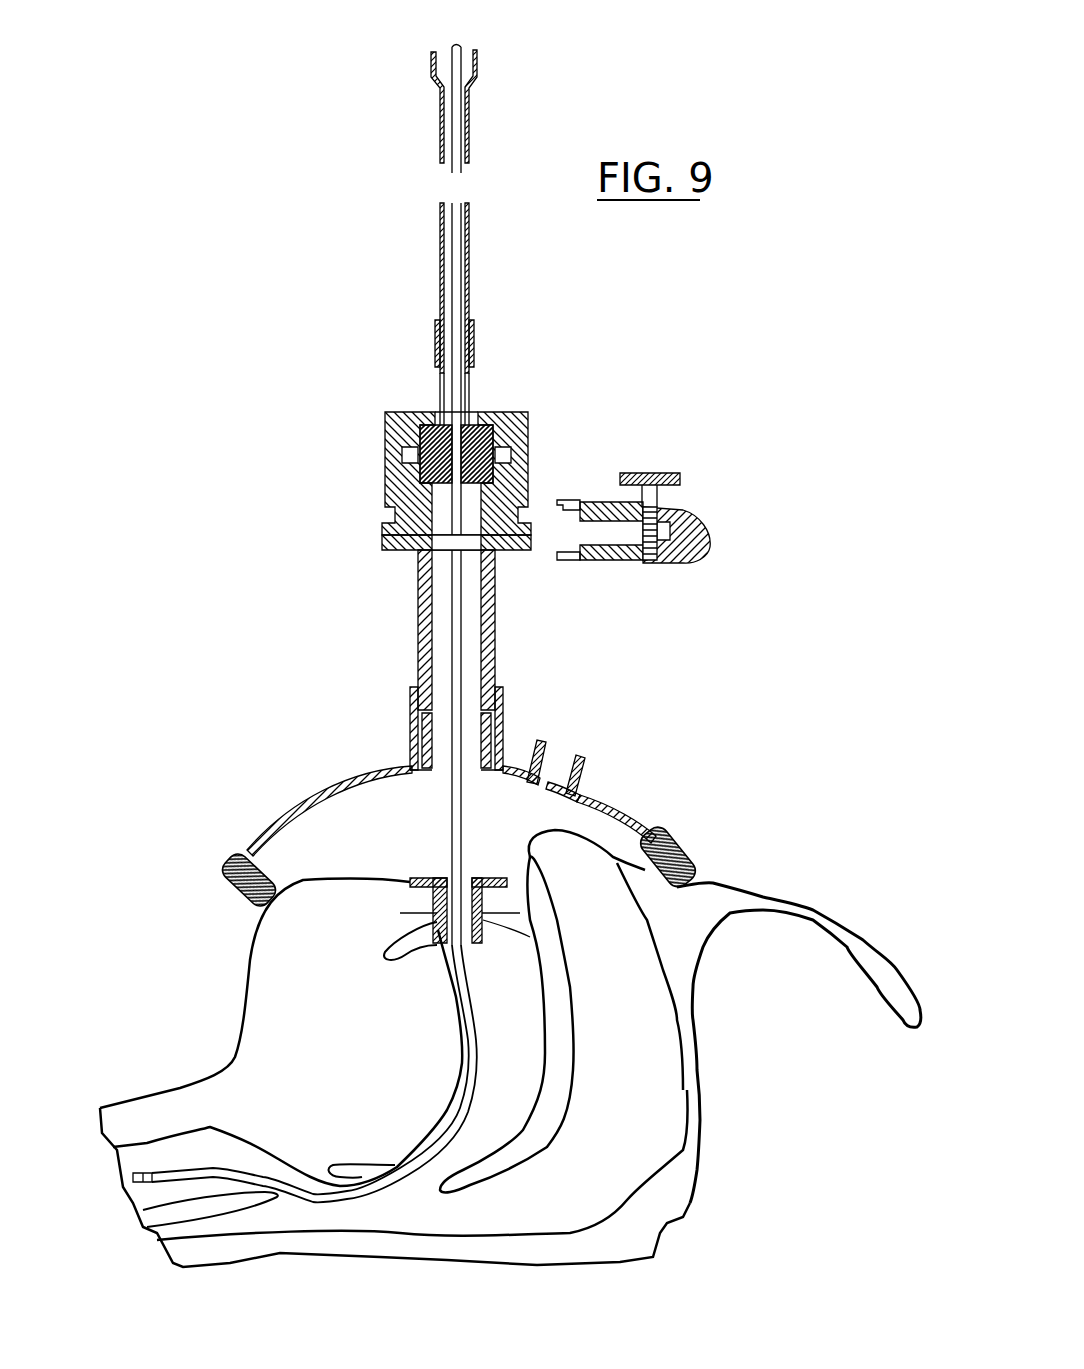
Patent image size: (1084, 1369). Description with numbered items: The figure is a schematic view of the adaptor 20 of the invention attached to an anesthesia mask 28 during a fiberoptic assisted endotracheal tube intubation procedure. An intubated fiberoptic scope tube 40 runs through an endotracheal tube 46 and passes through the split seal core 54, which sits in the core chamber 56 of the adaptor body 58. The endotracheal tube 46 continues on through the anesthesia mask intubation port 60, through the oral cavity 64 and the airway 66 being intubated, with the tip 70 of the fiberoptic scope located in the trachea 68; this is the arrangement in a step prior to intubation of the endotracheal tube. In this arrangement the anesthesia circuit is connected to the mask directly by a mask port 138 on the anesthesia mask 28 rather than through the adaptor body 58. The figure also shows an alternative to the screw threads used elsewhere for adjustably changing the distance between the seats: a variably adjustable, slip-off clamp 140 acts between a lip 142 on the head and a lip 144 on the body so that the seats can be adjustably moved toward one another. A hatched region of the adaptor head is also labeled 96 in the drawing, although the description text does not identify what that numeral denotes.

The adaptor 20 is at (530, 430).
The anesthesia mask 28 is at (630, 822).
The fiberoptic scope tube 40 is at (460, 203).
The endotracheal tube 46 is at (468, 240).
The split seal core 54 is at (463, 423).
The core chamber 56 is at (417, 413).
The adaptor body 58 is at (418, 627).
The anesthesia mask intubation port 60 is at (497, 720).
The oral cavity 64 is at (503, 1070).
The airway 66 is at (437, 887).
The trachea 68 is at (205, 1135).
The tip 70 is at (140, 1172).
The hub cap 96 is at (387, 428).
The mask port 138 is at (578, 755).
The slip-off clamp 140 is at (698, 517).
The lip 142 is at (533, 517).
The lip 144 is at (513, 552).